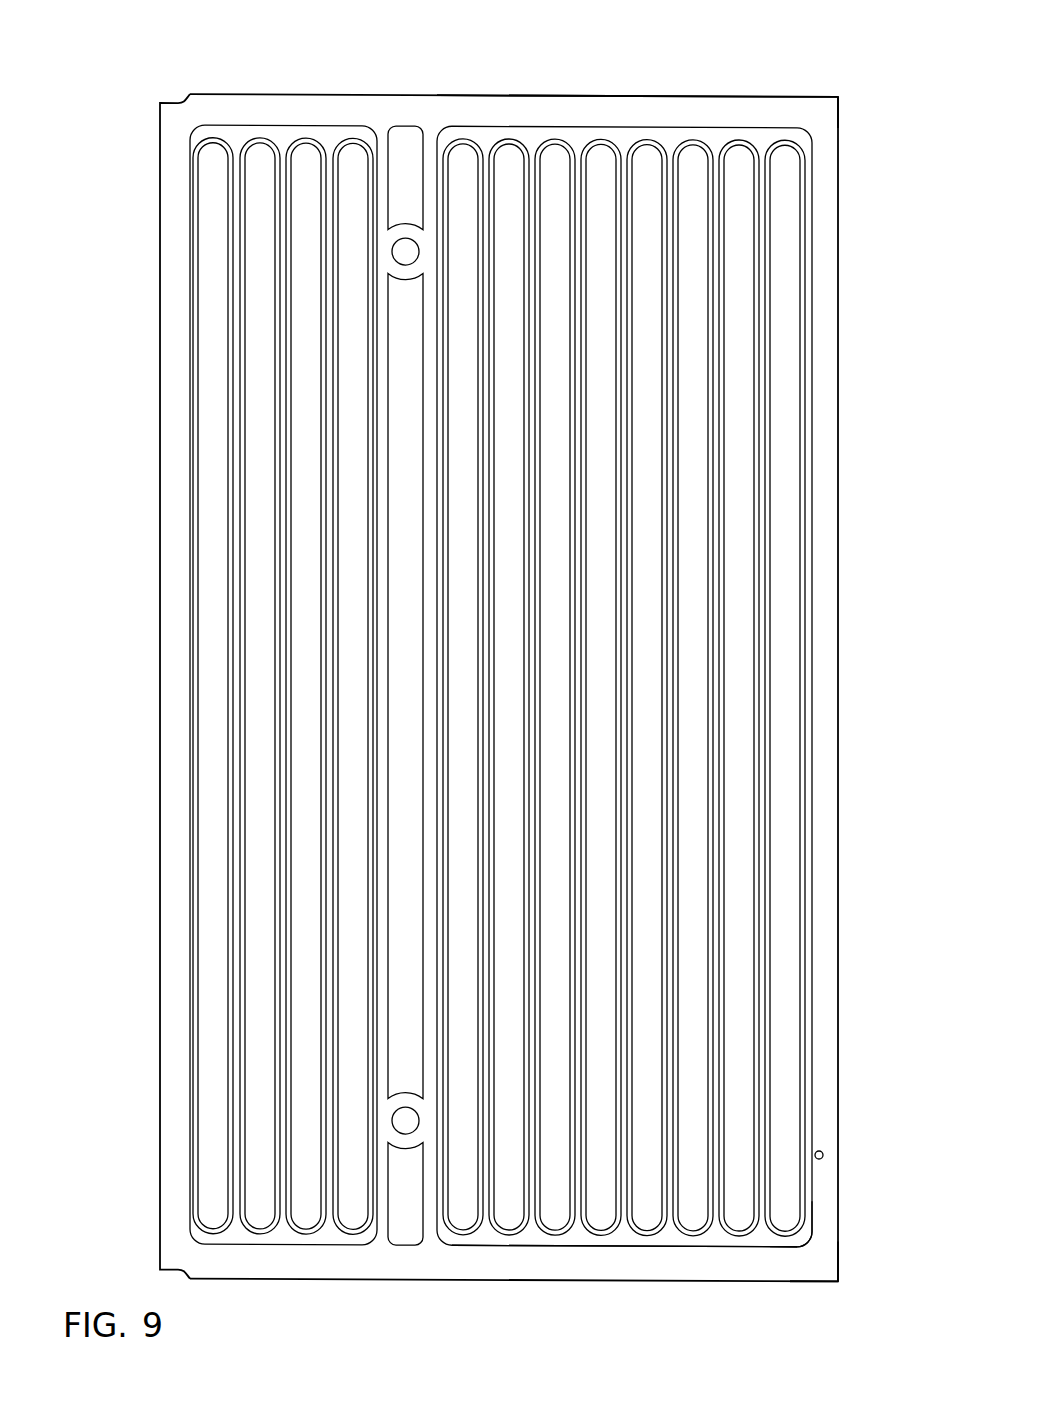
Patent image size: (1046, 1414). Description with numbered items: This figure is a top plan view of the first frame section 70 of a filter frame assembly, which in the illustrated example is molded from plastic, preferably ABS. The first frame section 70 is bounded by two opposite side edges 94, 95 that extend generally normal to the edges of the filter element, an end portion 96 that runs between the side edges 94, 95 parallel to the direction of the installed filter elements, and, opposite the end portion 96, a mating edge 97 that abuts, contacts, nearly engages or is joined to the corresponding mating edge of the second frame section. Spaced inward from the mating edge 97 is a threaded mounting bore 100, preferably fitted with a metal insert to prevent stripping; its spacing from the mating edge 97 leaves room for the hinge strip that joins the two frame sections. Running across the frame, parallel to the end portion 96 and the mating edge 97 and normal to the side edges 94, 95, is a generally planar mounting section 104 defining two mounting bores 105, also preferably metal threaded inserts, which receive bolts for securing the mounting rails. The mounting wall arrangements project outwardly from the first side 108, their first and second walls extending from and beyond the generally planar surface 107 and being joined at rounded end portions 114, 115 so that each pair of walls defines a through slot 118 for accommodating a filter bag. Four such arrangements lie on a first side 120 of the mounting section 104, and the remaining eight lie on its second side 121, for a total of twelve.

The first frame section 70 is at (140, 66).
The side edge 94 is at (593, 97).
The side edge 95 is at (675, 1265).
The end portion 96 is at (160, 538).
The mating edge 97 is at (838, 436).
The threaded mounting bore 100 is at (822, 1150).
The mounting section 104 is at (412, 1220).
The mounting bore 105 is at (397, 252).
The generally planar surface 107 is at (763, 1238).
The first side 108 is at (832, 1262).
The rounded end portion 114 is at (785, 143).
The rounded end portion 115 is at (800, 1243).
The through slot 118 is at (800, 710).
The first side of the mounting section 120 is at (280, 140).
The second side of the mounting section 121 is at (737, 103).